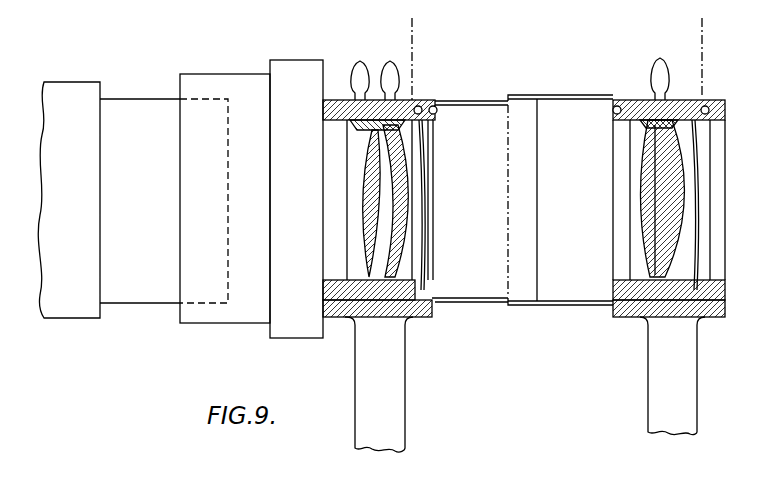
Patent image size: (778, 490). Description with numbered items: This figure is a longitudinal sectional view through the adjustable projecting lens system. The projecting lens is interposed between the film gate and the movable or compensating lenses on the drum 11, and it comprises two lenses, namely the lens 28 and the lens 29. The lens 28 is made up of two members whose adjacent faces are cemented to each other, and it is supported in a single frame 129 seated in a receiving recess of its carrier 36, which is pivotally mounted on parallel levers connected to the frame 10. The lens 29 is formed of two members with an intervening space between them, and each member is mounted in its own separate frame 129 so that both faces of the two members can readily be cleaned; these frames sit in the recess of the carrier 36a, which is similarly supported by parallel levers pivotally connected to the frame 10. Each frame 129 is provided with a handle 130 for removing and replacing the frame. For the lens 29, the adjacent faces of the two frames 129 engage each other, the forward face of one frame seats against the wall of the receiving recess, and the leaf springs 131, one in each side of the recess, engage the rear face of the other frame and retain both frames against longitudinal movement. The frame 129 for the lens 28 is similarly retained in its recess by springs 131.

The frame 10 is at (413, 50).
The drum 11 is at (706, 47).
The lens 28 is at (642, 205).
The lens 29 is at (400, 208).
The carrier 36 is at (688, 358).
The carrier 36a is at (395, 366).
The frame 129 is at (353, 307).
The handle 130 is at (390, 62).
The leaf spring 131 is at (418, 248).